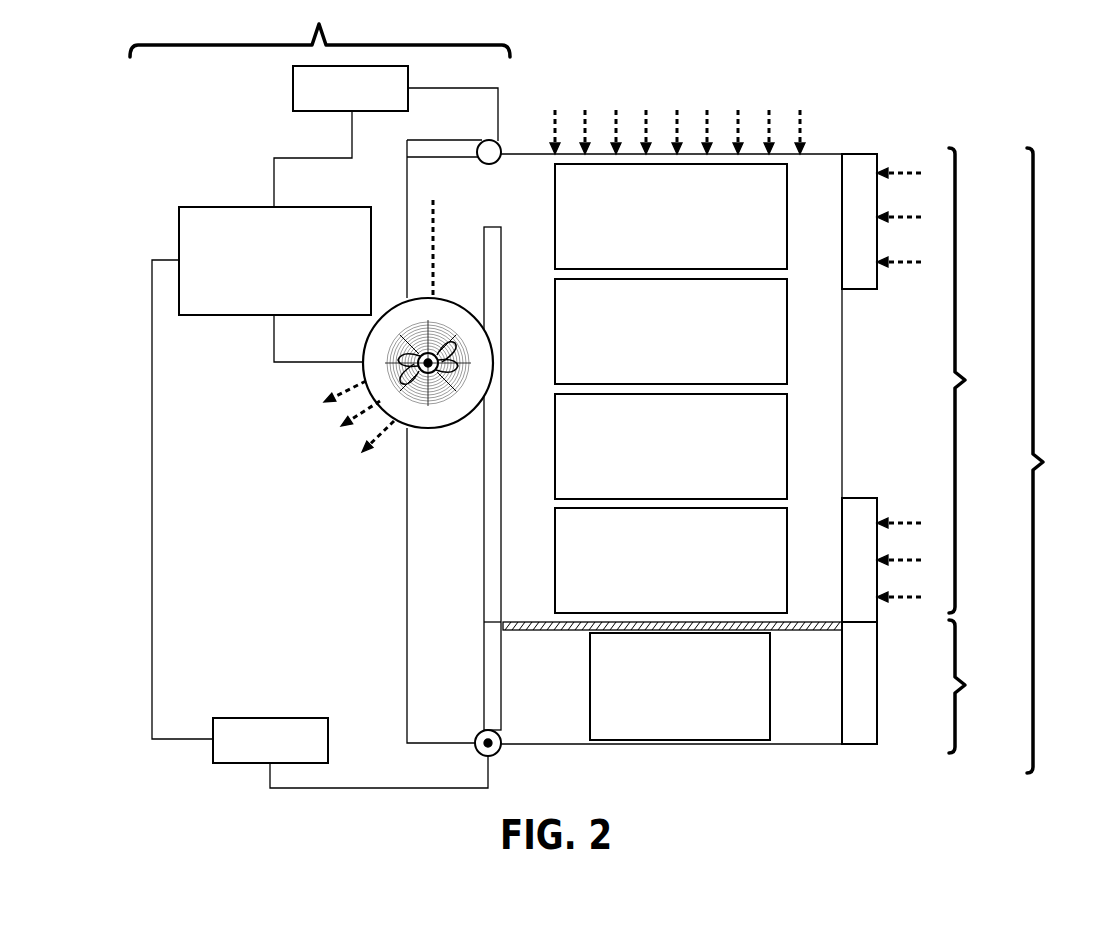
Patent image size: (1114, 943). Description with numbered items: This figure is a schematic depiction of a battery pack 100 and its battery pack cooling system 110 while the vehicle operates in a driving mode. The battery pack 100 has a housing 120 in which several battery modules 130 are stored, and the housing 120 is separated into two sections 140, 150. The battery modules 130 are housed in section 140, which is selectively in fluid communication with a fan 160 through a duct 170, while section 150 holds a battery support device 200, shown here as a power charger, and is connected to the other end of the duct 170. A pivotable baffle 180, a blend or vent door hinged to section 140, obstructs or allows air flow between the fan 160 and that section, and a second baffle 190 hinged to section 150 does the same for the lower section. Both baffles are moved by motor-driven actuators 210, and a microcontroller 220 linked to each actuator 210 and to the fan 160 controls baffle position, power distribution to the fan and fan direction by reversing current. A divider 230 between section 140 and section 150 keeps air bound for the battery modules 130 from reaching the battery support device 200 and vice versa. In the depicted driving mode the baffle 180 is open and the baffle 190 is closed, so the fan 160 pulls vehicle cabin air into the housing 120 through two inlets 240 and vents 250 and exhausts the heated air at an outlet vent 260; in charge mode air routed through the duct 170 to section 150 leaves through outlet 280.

The battery pack 100 is at (1062, 460).
The battery pack cooling system 110 is at (320, 28).
The housing 120 is at (815, 154).
The battery modules 130 is at (787, 553).
The section 140 is at (984, 380).
The section 150 is at (983, 686).
The fan 160 is at (425, 388).
The duct 170 is at (406, 590).
The pivotable baffle 180 is at (466, 140).
The baffle 190 is at (484, 678).
The battery support device 200 is at (770, 697).
The motor-driven actuators 210 is at (293, 94).
The microcontroller 220 is at (179, 235).
The divider 230 is at (528, 622).
The inlets 240 is at (877, 277).
The vents 250 is at (660, 154).
The outlet vent 260 is at (371, 397).
The outlet 280 is at (877, 705).